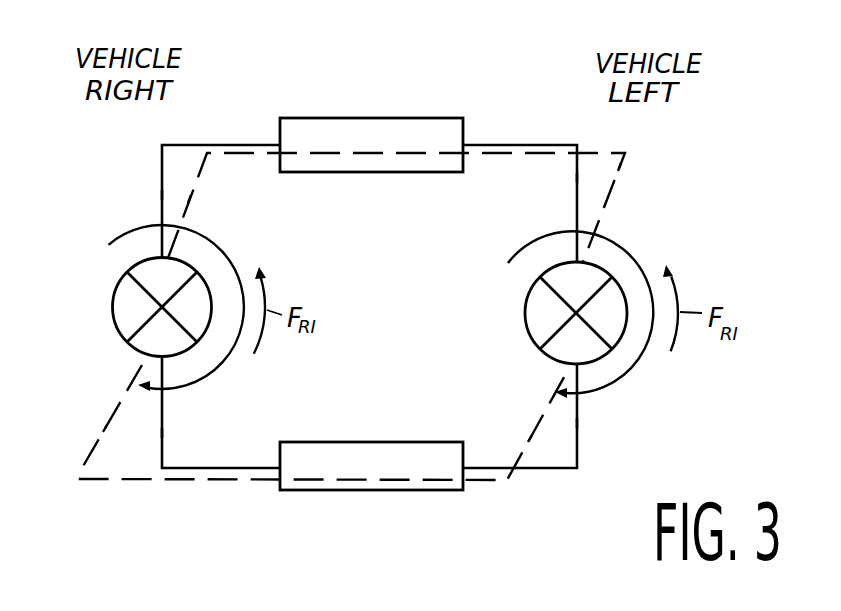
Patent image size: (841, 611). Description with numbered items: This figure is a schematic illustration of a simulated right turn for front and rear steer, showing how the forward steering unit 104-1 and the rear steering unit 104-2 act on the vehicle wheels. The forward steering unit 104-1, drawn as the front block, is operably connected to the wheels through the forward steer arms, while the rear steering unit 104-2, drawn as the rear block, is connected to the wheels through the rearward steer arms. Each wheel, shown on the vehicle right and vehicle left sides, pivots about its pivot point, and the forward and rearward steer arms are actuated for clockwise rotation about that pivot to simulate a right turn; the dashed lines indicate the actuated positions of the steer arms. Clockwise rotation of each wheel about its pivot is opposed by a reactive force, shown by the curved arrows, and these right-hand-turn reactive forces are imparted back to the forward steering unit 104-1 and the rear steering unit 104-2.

The forward steering unit 104-1 is at (369, 430).
The rear steering unit 104-2 is at (370, 109).